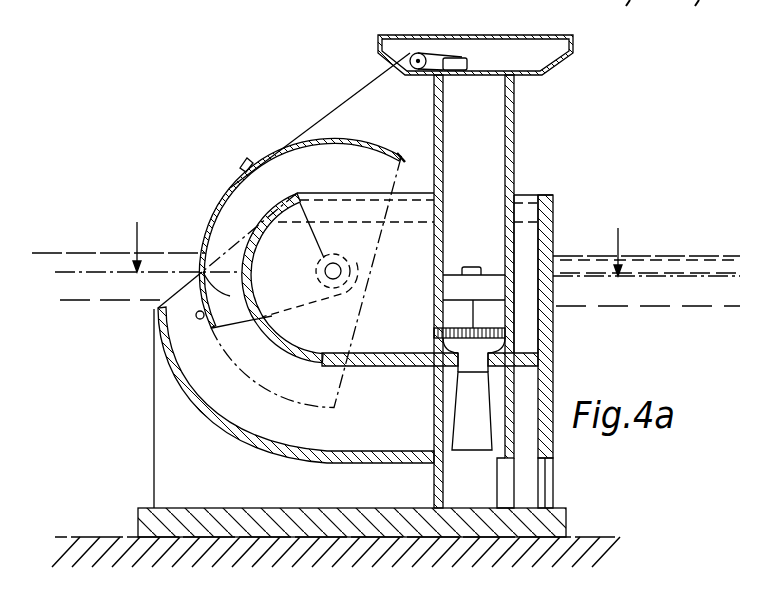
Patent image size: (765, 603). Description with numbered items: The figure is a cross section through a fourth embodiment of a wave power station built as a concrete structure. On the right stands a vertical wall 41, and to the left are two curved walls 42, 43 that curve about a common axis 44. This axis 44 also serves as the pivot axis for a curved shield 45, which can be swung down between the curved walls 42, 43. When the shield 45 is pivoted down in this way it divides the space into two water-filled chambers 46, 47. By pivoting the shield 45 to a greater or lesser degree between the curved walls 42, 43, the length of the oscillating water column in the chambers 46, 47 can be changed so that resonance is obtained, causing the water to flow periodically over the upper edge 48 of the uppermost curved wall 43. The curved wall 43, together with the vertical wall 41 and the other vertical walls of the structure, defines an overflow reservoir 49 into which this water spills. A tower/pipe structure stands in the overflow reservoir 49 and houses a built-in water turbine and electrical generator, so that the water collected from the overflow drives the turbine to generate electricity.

The vertical wall 41 is at (553, 326).
The curved wall 42 is at (218, 411).
The curved wall 43 is at (295, 357).
The axis 44 is at (333, 263).
The curved shield 45 is at (218, 203).
The water-filled chamber 46 is at (182, 322).
The water-filled chamber 47 is at (202, 266).
The upper edge 48 is at (297, 192).
The overflow reservoir 49 is at (553, 215).